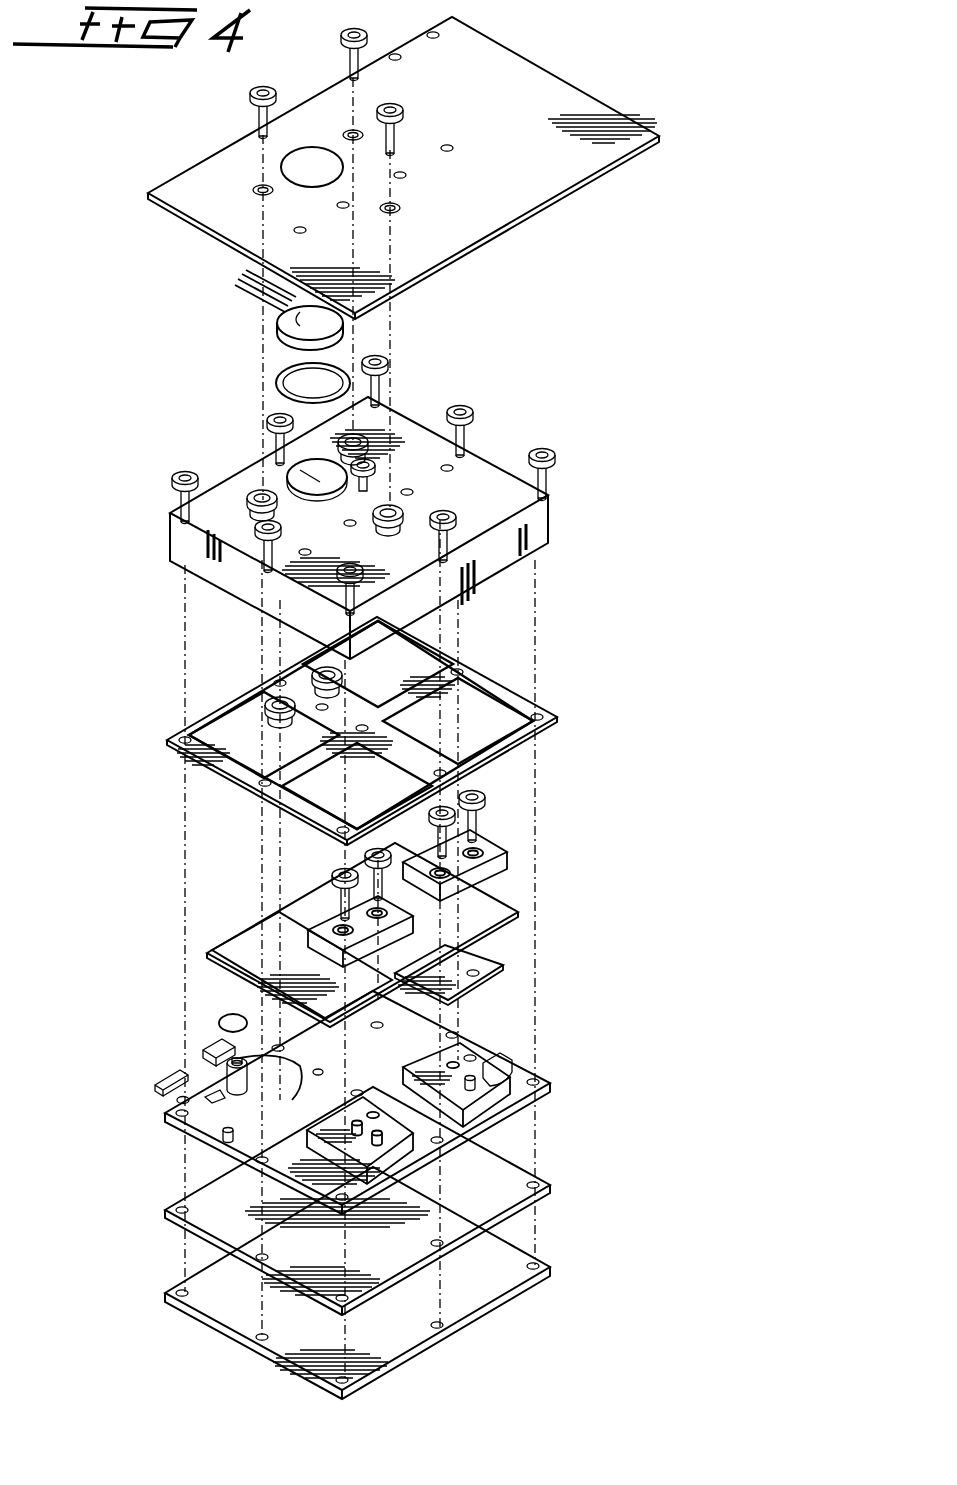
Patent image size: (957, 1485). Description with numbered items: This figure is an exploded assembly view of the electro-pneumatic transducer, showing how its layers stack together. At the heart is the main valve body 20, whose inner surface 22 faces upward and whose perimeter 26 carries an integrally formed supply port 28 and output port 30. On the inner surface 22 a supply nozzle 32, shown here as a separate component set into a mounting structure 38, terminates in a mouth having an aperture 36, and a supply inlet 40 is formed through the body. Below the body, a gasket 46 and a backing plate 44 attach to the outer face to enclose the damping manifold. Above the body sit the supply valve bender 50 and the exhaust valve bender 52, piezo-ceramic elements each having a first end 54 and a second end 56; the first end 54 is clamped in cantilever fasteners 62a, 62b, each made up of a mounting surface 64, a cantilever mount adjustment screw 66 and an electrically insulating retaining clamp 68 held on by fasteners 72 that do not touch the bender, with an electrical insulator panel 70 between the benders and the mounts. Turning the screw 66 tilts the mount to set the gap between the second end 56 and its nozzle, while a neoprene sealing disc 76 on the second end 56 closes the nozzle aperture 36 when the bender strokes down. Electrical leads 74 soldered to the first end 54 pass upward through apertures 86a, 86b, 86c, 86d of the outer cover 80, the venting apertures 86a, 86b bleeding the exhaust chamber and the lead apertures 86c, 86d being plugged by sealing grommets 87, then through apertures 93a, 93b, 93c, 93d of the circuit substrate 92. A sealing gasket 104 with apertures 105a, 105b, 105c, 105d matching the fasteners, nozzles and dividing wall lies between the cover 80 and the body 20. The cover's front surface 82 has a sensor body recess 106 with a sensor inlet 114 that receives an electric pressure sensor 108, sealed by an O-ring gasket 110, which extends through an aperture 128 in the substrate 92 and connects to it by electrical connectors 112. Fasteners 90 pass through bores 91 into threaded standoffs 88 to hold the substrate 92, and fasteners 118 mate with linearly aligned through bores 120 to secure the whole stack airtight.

The main valve body 20 is at (172, 1147).
The inner surface 22 is at (532, 1072).
The perimeter 26 is at (540, 1105).
The supply port 28 is at (172, 1073).
The output port 30 is at (205, 1050).
The supply nozzle 32 is at (283, 1095).
The aperture 36 is at (313, 1072).
The mounting structure 38 is at (243, 1092).
The supply inlet 40 is at (175, 1100).
The backing plate 44 is at (498, 1290).
The gasket 46 is at (528, 1204).
The supply valve bender 50 is at (198, 968).
The exhaust valve bender 52 is at (312, 892).
The first end 54 is at (500, 946).
The second end 56 is at (222, 948).
The cantilever fastener 62a is at (182, 1215).
The cantilever fastener 62b is at (538, 1188).
The mounting surface 64 is at (462, 1062).
The cantilever mount adjustment screw 66 is at (495, 1105).
The retaining clamp 68 is at (510, 860).
The electrical insulator panel 70 is at (500, 982).
The fastener 72 is at (485, 806).
The electrical lead 74 is at (350, 828).
The sealing disc 76 is at (225, 1018).
The outer cover 80 is at (200, 463).
The front surface 82 is at (493, 460).
The aperture 86a is at (452, 470).
The aperture 86b is at (407, 490).
The aperture 86c is at (345, 525).
The aperture 86d is at (311, 553).
The sealing grommet 87 is at (440, 685).
The threaded standoff 88 is at (368, 440).
The fastener 90 is at (402, 110).
The bore 91 is at (400, 210).
The circuit substrate 92 is at (568, 200).
The aperture 93a is at (449, 148).
The aperture 93b is at (405, 176).
The aperture 93c is at (344, 207).
The aperture 93d is at (300, 231).
The sealing gasket 104 is at (520, 704).
The aperture 105a is at (490, 735).
The aperture 105b is at (330, 672).
The aperture 105c is at (212, 740).
The aperture 105d is at (300, 790).
The sensor body recess 106 is at (290, 474).
The electric pressure sensor 108 is at (335, 318).
The O-ring gasket 110 is at (280, 387).
The electrical connector 112 is at (250, 300).
The sensor inlet 114 is at (300, 470).
The fastener 118 is at (543, 458).
The through bore 120 is at (462, 556).
The aperture 128 is at (285, 170).